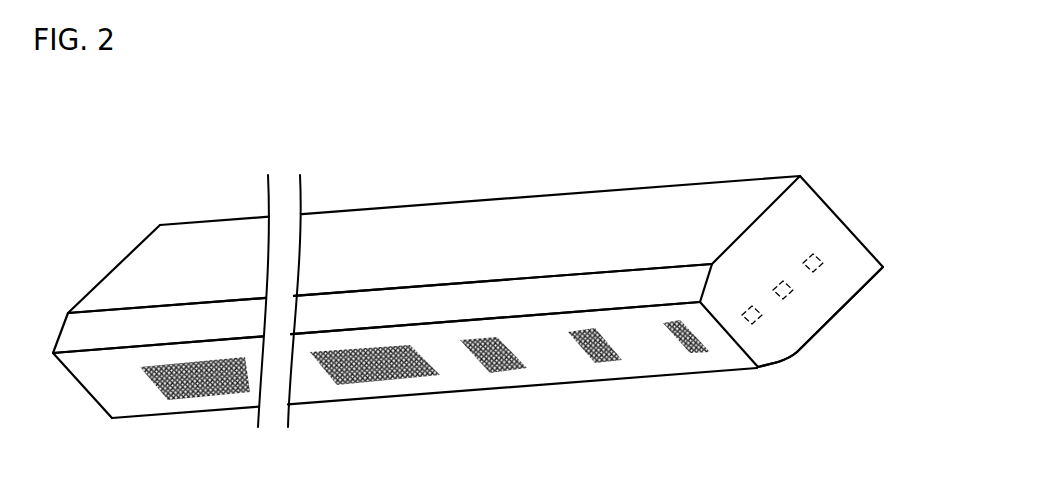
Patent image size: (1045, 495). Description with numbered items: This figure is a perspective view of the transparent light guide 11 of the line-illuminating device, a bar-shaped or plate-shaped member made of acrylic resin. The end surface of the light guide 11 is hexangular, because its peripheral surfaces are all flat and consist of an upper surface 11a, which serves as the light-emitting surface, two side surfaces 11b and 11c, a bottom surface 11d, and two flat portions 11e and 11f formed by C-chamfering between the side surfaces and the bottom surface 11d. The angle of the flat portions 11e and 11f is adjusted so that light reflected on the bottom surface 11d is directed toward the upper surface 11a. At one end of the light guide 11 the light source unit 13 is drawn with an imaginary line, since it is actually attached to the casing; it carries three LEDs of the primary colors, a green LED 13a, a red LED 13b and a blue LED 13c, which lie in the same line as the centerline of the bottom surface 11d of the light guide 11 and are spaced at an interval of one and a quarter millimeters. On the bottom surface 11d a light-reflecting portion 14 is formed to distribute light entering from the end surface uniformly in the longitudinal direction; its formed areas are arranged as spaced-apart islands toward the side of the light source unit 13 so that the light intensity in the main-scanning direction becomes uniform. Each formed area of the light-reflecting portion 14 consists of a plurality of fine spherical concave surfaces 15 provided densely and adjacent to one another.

The light guide 11 is at (484, 280).
The upper surface 11a is at (833, 207).
The side surface 11b is at (542, 208).
The side surface 11c is at (823, 327).
The bottom surface 11d is at (657, 348).
The flat portion 11e is at (638, 290).
The flat portion 11f is at (775, 362).
The light source unit 13 is at (823, 225).
The LED 13a is at (752, 306).
The LED 13b is at (783, 281).
The LED 13c is at (823, 265).
The light-reflecting portion 14 is at (207, 395).
The spherical concave surface 15 is at (410, 382).